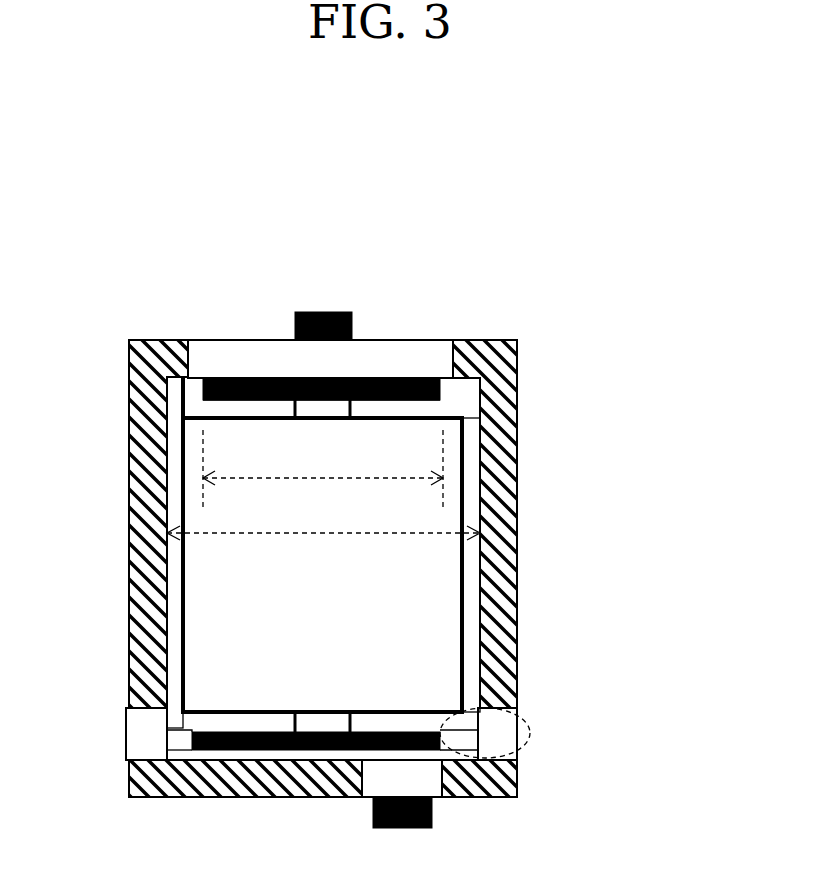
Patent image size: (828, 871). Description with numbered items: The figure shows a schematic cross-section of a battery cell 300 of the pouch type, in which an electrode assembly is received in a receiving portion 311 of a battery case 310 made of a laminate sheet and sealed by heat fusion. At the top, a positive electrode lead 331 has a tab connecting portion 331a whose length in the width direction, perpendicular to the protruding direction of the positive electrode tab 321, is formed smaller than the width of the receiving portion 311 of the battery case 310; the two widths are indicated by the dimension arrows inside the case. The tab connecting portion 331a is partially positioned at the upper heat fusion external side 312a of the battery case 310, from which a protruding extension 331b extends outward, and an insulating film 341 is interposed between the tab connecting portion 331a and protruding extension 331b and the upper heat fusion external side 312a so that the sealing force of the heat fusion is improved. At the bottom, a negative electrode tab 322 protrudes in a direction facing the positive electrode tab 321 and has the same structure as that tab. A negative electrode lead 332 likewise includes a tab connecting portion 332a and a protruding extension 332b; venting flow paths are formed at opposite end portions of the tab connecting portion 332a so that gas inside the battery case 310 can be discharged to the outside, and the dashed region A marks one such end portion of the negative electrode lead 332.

The battery cell 300 is at (140, 298).
The battery case 310 is at (337, 564).
The receiving portion 311 is at (473, 562).
The upper heat fusion external side 312a is at (152, 346).
The positive electrode tab 321 is at (350, 420).
The negative electrode tab 322 is at (345, 712).
The positive electrode lead 331 is at (441, 353).
The tab connecting portion 331a is at (445, 398).
The protruding extension 331b is at (355, 338).
The negative electrode lead 332 is at (322, 798).
The tab connecting portion 332a is at (349, 762).
The protruding extension 332b is at (375, 828).
The insulating film 341 is at (242, 338).
The region A is at (540, 712).